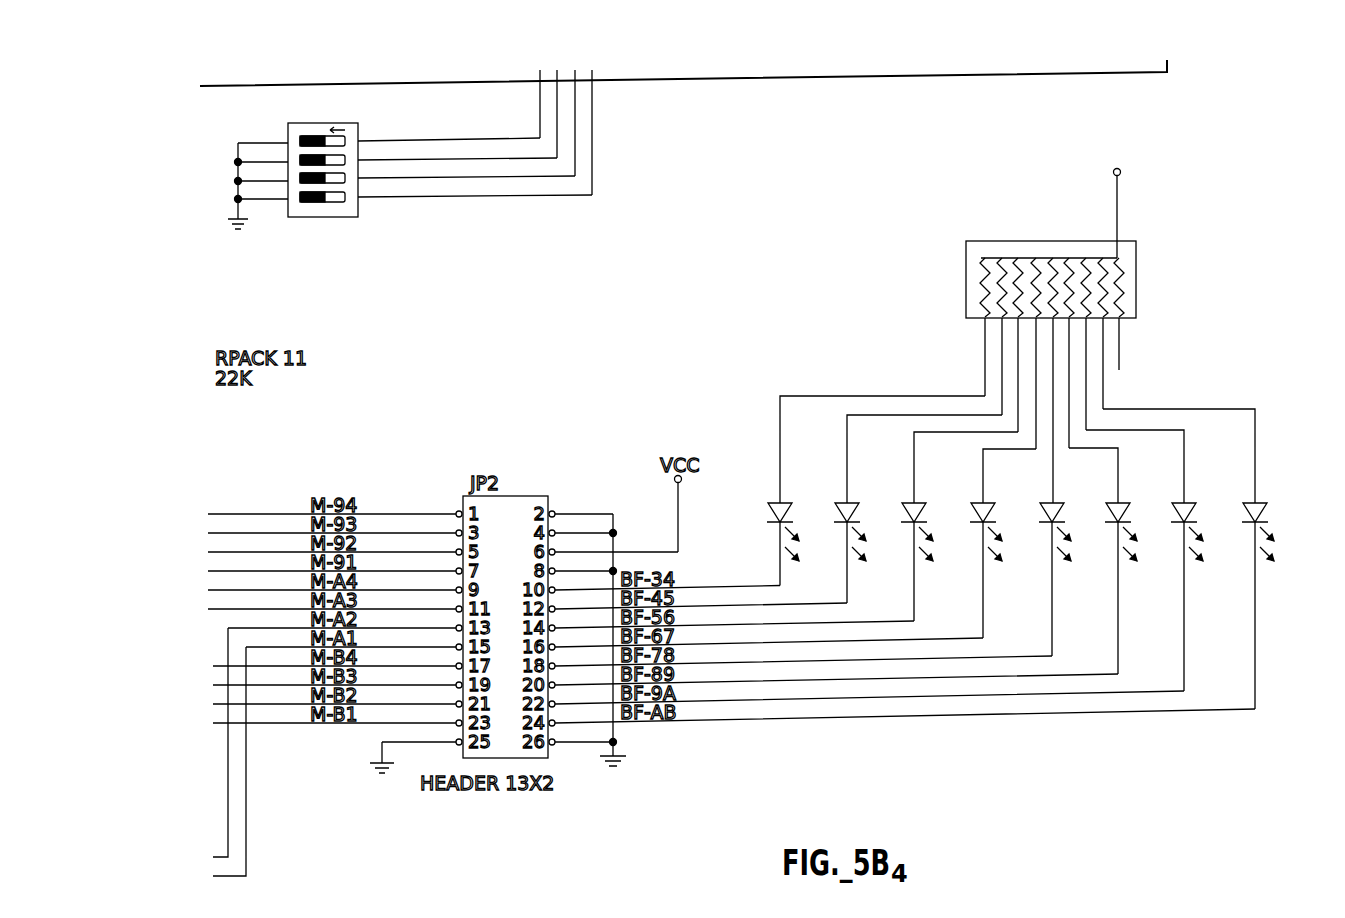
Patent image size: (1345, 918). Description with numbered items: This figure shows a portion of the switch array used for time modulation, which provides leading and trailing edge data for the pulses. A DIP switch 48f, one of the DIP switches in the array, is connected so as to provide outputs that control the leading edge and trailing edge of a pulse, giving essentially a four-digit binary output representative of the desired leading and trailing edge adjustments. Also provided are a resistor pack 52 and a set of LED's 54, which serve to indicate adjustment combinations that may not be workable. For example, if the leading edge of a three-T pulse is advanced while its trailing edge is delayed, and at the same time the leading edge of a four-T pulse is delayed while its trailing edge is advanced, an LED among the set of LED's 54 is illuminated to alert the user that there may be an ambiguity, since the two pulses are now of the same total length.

The DIP switch 48f is at (330, 238).
The resistor pack 52 is at (966, 296).
The set of LED's 54 is at (763, 415).